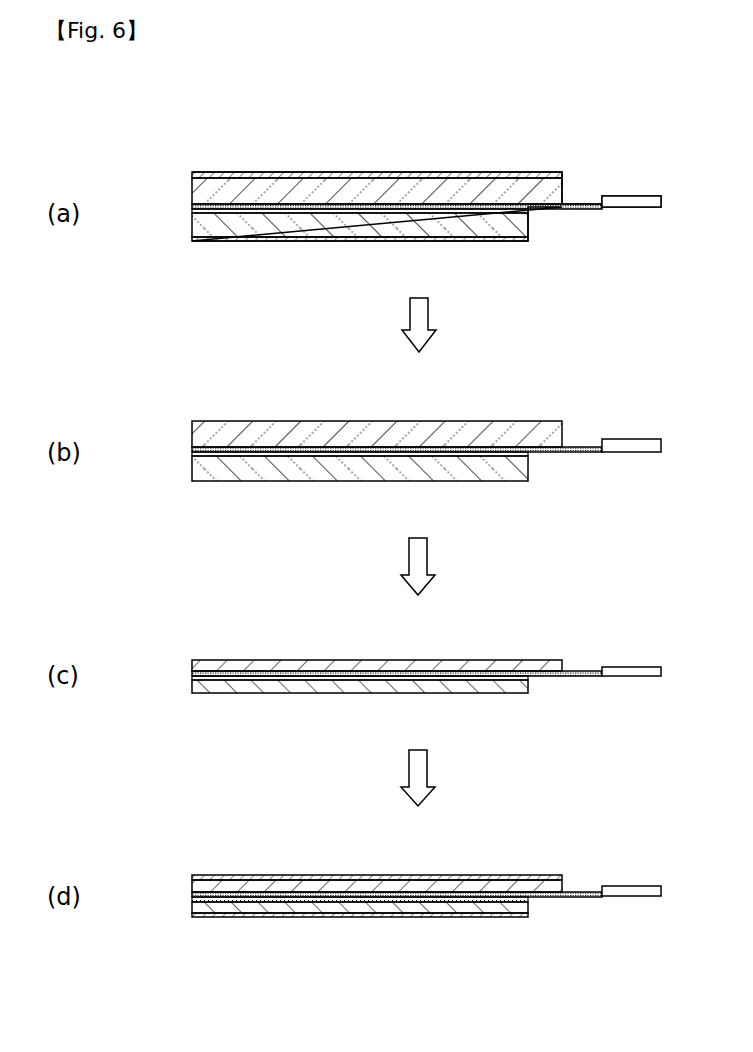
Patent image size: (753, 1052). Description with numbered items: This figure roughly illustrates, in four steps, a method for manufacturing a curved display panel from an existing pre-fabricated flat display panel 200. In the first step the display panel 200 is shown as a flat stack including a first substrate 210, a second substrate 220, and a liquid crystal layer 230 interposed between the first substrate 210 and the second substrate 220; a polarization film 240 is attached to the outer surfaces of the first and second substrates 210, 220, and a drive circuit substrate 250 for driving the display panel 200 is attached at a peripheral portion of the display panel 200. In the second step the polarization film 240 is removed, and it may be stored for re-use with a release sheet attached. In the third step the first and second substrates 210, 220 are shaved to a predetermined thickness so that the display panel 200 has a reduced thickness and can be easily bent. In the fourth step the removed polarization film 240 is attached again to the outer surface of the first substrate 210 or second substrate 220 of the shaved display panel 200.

The display panel 200 is at (224, 150).
The first substrate 210 is at (355, 186).
The second substrate 220 is at (452, 228).
The liquid crystal layer 230 is at (412, 200).
The polarization film 240 is at (268, 173).
The drive circuit substrate 250 is at (626, 196).